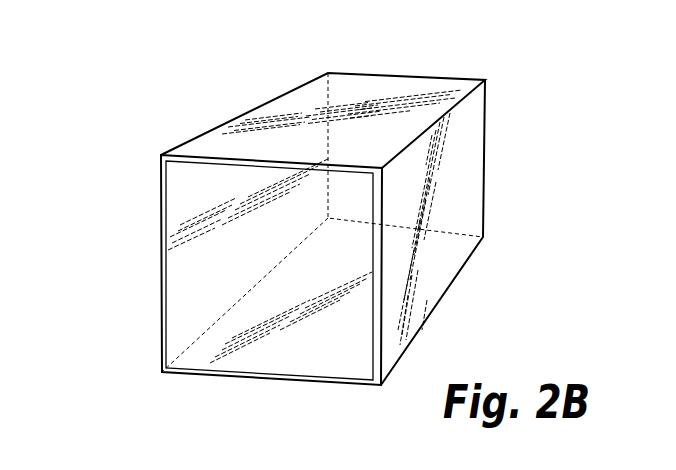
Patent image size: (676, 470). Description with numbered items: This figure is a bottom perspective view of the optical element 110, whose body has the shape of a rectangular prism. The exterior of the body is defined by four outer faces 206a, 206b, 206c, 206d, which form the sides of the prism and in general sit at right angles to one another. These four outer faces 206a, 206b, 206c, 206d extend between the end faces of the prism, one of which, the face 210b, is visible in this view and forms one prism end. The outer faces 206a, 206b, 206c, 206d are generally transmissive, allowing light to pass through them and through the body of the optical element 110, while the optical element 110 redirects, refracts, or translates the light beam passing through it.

The optical element 110 is at (113, 133).
The outer face 206a is at (458, 162).
The outer face 206b is at (196, 376).
The outer face 206c is at (160, 195).
The outer face 206d is at (385, 92).
The face 210b is at (205, 252).